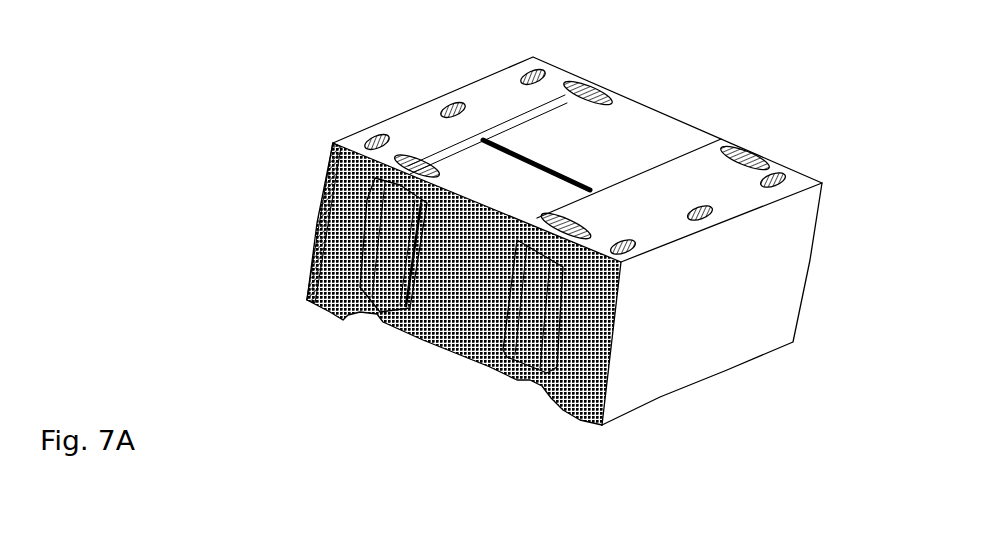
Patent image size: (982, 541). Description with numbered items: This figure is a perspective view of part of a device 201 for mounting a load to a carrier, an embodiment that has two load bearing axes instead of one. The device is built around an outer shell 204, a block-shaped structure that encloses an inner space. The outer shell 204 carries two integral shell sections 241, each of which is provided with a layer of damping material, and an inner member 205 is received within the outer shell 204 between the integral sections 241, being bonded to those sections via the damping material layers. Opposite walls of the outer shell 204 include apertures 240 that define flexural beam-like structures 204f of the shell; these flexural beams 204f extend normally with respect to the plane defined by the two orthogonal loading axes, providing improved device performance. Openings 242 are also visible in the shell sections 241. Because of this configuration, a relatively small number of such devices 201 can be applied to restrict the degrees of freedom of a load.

The device for mounting a load to a carrier 201 is at (292, 175).
The outer shell 204 is at (368, 260).
The beam-like structures 204f is at (617, 96).
The inner member 205 is at (567, 152).
The apertures 240 is at (368, 260).
The integral shell sections 241 is at (477, 155).
The mounting holes 242 is at (507, 175).